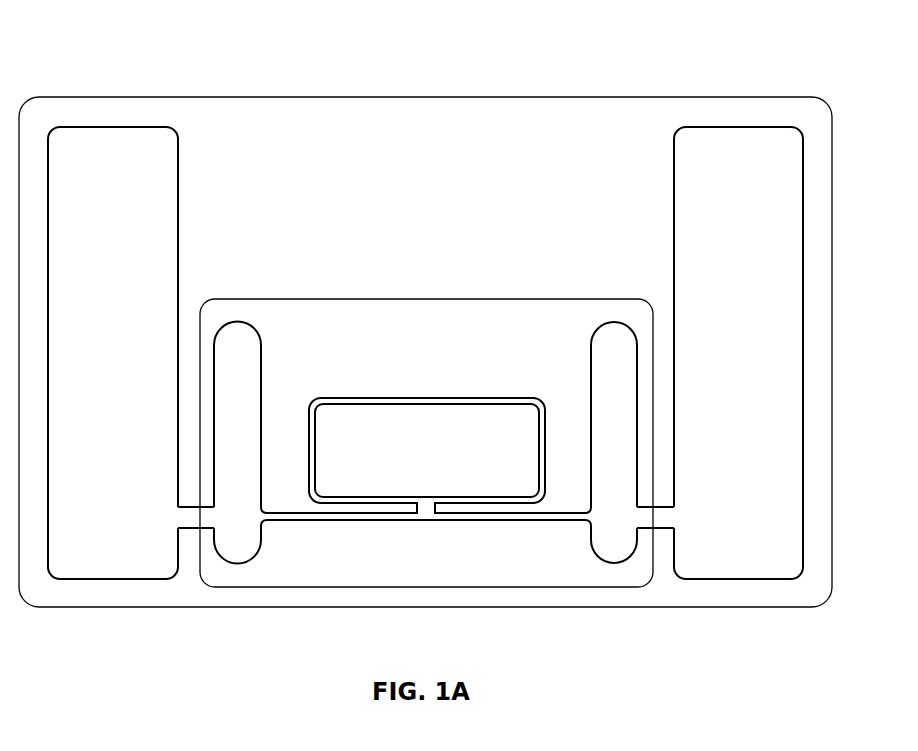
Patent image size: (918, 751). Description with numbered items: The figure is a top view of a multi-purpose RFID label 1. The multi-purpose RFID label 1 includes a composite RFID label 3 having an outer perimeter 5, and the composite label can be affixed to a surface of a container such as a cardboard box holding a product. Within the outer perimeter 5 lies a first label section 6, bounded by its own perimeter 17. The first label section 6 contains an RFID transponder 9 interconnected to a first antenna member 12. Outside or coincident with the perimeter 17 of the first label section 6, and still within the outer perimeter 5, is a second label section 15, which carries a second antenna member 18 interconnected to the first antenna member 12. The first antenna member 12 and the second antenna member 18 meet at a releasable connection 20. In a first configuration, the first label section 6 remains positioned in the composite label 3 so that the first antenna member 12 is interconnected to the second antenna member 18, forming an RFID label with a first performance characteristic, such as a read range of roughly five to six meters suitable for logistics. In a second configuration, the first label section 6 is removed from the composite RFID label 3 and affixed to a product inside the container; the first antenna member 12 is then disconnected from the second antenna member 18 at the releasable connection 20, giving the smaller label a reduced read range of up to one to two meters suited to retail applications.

The multi-purpose RFID label 1 is at (318, 50).
The composite RFID label 3 is at (639, 84).
The outer perimeter 5 is at (161, 95).
The first label section 6 is at (423, 357).
The RFID transponder 9 is at (427, 401).
The first antenna member 12 is at (240, 456).
The second label section 15 is at (288, 188).
The perimeter of the first label section 17 is at (406, 298).
The second antenna member 18 is at (425, 353).
The releasable connection 20 is at (201, 513).